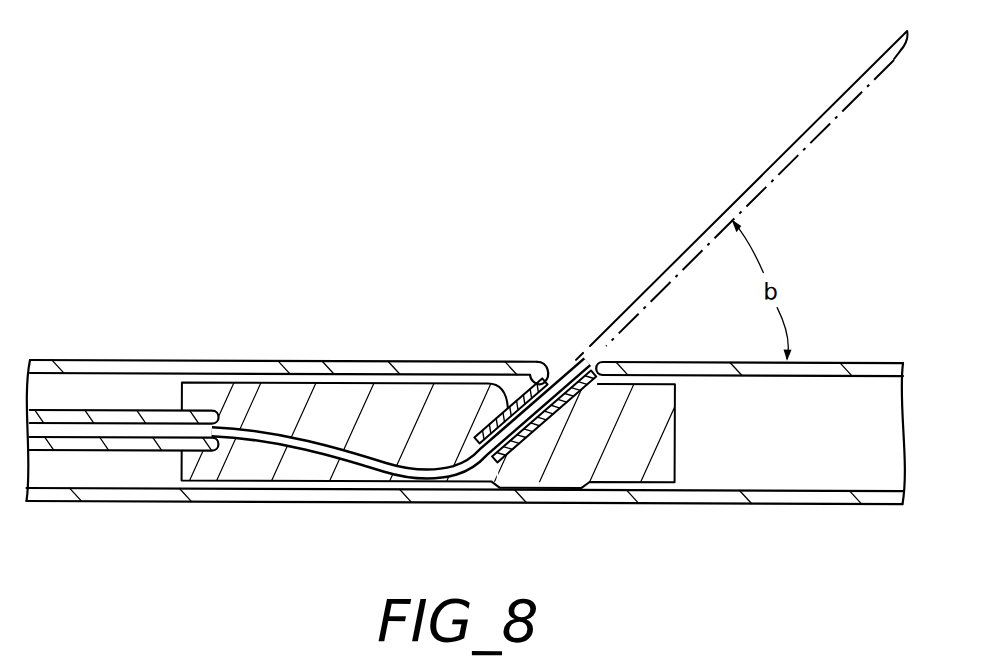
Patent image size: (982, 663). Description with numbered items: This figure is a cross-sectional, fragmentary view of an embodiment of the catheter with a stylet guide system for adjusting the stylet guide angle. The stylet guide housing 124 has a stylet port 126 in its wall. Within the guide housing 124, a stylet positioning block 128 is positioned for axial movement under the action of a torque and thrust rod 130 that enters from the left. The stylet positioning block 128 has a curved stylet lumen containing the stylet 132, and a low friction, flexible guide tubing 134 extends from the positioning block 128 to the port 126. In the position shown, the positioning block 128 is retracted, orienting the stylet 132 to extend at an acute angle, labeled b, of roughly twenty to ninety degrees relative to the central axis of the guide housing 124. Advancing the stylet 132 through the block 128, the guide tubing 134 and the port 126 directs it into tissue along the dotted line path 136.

The stylet guide housing 124 is at (372, 310).
The stylet port 126 is at (553, 350).
The stylet positioning block 128 is at (238, 466).
The torque and thrust rod 130 is at (153, 408).
The stylet 132 is at (424, 463).
The guide tubing 134 is at (543, 423).
The dotted line path 136 is at (770, 157).